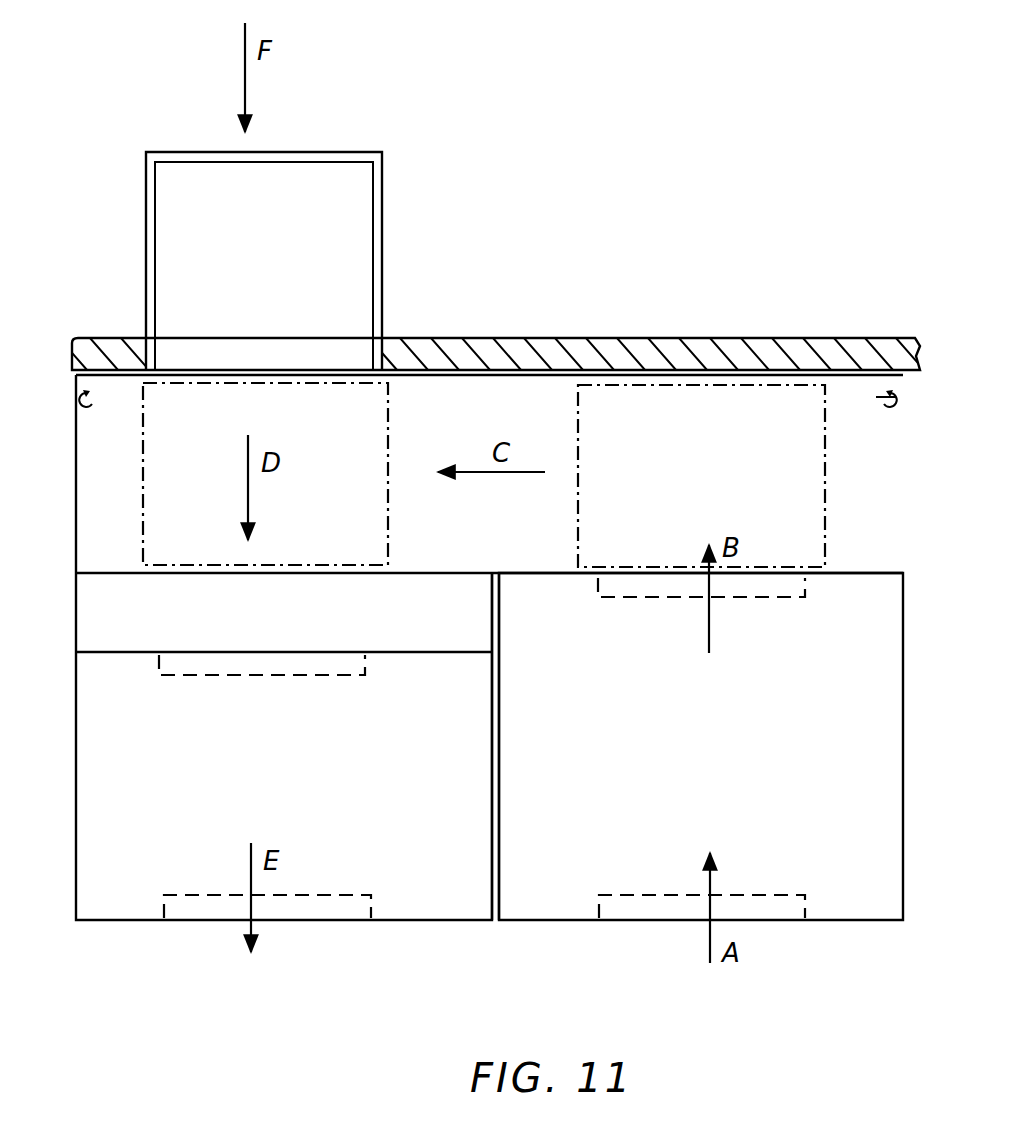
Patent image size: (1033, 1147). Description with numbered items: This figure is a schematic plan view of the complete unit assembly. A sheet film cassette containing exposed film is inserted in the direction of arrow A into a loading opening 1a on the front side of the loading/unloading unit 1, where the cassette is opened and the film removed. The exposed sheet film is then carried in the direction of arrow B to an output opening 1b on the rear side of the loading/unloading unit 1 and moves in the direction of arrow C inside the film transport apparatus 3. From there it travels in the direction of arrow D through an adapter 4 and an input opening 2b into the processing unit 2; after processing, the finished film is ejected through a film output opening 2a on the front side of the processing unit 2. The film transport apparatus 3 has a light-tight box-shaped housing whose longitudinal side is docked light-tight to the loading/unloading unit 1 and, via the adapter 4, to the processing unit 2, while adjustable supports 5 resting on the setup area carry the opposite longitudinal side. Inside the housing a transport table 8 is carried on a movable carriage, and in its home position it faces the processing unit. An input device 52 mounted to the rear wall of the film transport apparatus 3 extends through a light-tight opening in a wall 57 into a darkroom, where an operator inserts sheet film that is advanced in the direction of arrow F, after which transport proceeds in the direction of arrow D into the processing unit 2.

The loading/unloading unit 1 is at (853, 908).
The loading opening 1a is at (652, 895).
The output opening 1b is at (778, 598).
The processing unit 2 is at (122, 910).
The film output opening 2a is at (340, 895).
The input opening 2b is at (222, 675).
The film transport apparatus 3 is at (843, 385).
The adapter 4 is at (465, 642).
The adjustable supports 5 is at (75, 390).
The transport table 8 is at (368, 428).
The input device 52 is at (345, 228).
The wall 57 is at (637, 343).